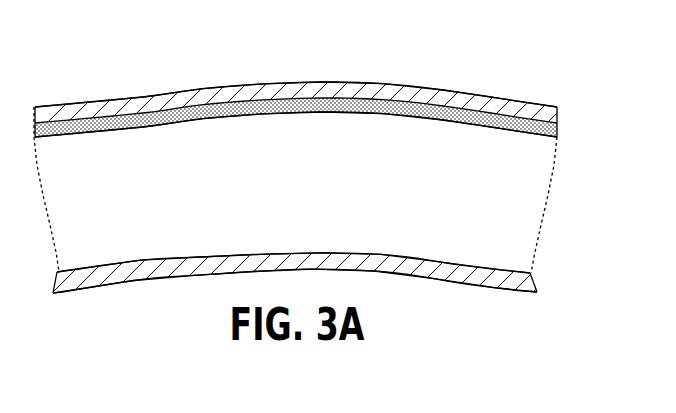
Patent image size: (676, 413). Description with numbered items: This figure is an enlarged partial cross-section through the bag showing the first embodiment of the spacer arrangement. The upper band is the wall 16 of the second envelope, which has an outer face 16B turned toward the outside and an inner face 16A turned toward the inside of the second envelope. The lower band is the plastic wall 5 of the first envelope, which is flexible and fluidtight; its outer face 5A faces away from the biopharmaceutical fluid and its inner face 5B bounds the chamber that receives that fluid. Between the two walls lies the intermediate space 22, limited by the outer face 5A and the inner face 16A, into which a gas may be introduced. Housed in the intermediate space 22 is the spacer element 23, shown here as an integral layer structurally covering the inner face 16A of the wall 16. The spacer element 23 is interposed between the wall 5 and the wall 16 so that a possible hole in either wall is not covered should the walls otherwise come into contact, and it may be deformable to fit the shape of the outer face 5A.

The wall of the second envelope 16 is at (508, 108).
The inner face of the wall of the second envelope 16A is at (143, 120).
The outer face of the wall of the second envelope 16B is at (462, 82).
The spacer element 23 is at (368, 106).
The intermediate space 22 is at (266, 134).
The wall of the first envelope 5 is at (517, 283).
The outer face of the wall of the first envelope 5A is at (143, 250).
The inner face of the wall of the first envelope 5B is at (461, 293).